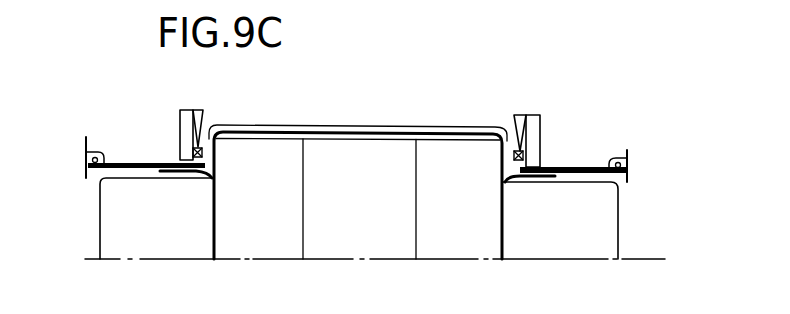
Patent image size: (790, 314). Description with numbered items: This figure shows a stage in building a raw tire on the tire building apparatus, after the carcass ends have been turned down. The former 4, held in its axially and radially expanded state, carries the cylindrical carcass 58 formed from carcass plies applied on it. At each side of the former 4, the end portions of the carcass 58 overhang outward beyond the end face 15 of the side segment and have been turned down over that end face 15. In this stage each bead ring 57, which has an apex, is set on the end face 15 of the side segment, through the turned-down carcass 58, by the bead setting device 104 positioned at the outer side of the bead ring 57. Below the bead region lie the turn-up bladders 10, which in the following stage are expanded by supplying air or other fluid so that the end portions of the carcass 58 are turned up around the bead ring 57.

The former 4 is at (264, 209).
The turn-up bladder 10 is at (150, 226).
The end face 15 is at (213, 128).
The bead ring 57 is at (194, 151).
The carcass 58 is at (429, 122).
The bead setting device 104 is at (541, 118).